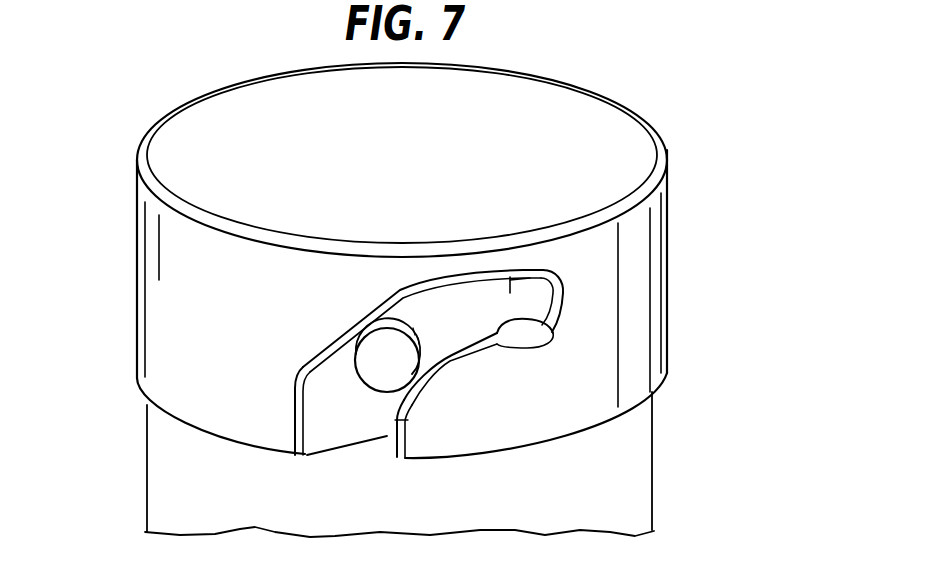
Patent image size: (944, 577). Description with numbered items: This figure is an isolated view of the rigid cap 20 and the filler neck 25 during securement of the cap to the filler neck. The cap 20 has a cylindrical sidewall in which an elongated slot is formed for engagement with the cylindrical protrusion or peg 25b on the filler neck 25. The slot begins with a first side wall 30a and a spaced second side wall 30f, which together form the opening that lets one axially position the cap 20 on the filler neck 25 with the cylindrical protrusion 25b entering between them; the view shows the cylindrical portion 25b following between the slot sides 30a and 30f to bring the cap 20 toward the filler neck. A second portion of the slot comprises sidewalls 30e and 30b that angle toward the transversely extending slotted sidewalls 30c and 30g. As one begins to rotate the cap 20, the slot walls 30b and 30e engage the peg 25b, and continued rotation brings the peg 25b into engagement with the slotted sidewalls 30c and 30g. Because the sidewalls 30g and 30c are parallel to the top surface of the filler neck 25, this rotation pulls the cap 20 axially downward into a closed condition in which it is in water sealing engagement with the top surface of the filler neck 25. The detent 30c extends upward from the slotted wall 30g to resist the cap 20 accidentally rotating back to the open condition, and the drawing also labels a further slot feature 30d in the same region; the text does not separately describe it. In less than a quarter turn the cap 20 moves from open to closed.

The cap 20 is at (597, 127).
The filler neck 25 is at (146, 467).
The cylindrical protrusion 25b is at (388, 363).
The first side wall 30a is at (300, 403).
The slot sidewall 30b is at (310, 358).
The transversely extending slotted sidewall 30c is at (510, 293).
The slot inner rib 30d is at (548, 318).
The slot sidewall 30e is at (452, 358).
The second side wall 30f is at (408, 420).
The transversely extending slotted sidewall 30g is at (552, 338).